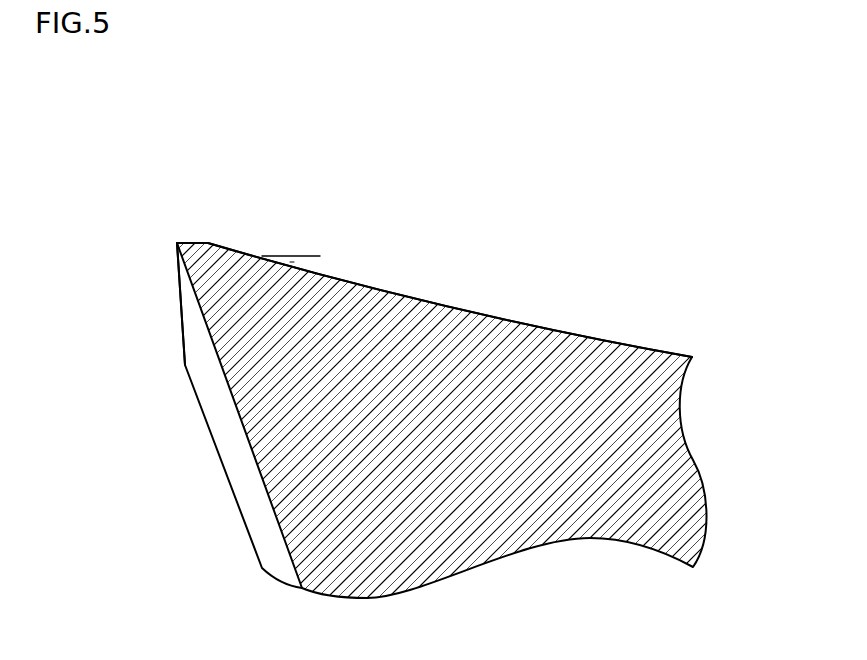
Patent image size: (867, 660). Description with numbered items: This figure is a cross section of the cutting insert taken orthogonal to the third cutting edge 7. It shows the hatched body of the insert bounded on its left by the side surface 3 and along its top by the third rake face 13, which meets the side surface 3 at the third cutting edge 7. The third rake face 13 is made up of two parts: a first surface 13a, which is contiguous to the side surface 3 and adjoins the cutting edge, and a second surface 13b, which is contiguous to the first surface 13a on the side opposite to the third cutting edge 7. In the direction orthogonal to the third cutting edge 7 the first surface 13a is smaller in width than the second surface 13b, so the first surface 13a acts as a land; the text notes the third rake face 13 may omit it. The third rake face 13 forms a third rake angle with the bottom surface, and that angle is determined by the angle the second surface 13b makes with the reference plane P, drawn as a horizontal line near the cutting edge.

The side surface 3 is at (215, 392).
The third cutting edge 7 is at (176, 241).
The third rake face 13 is at (424, 215).
The first surface 13a is at (199, 242).
The second surface 13b is at (450, 234).
The reference plane P is at (317, 256).